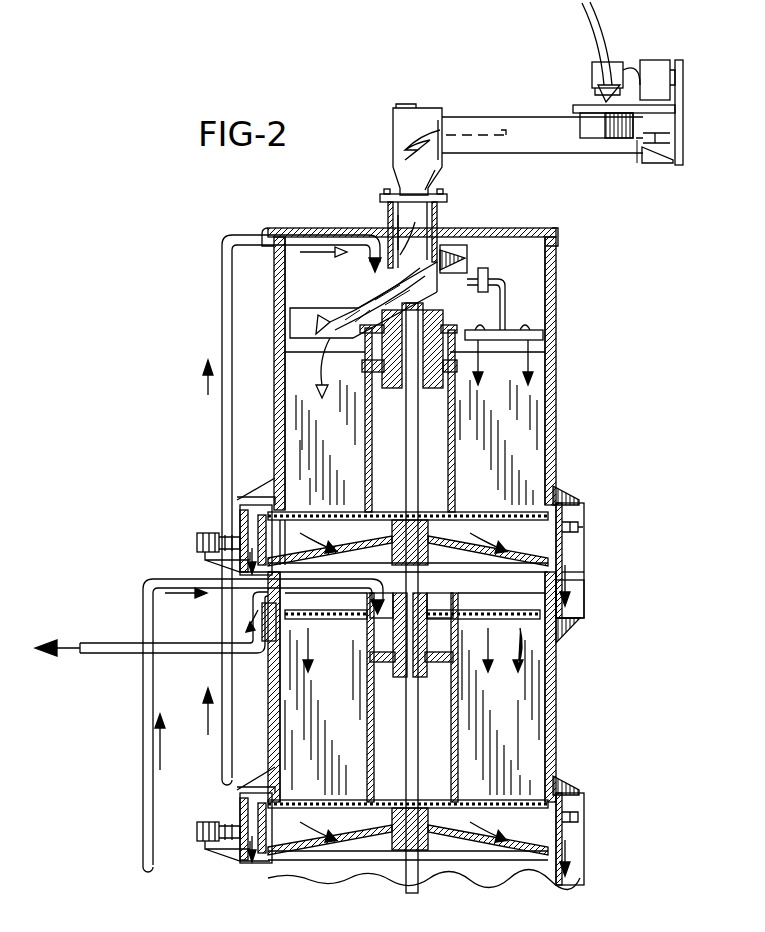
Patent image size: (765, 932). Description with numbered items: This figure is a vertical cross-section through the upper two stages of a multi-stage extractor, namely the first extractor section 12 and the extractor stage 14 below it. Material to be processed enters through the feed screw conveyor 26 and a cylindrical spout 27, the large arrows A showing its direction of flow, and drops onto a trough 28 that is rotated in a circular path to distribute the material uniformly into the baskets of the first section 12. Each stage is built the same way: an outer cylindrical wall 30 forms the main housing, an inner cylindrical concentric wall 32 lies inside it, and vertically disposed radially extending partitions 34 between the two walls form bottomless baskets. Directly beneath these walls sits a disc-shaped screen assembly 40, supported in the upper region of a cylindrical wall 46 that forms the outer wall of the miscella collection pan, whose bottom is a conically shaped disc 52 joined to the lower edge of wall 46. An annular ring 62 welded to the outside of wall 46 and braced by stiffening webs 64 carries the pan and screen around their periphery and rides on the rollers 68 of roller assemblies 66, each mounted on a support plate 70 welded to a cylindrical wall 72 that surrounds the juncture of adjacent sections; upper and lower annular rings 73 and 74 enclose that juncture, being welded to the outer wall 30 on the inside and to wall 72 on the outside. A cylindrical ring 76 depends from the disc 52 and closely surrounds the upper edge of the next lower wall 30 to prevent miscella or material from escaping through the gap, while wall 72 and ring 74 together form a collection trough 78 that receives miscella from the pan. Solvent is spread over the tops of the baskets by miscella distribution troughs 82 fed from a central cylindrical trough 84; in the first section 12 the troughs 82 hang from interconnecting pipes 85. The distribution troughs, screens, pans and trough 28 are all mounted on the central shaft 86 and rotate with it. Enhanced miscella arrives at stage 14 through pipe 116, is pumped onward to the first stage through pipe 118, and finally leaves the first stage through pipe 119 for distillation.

The first extractor section 12 is at (575, 364).
The extractor stage 14 is at (566, 702).
The feed screw conveyor 26 is at (505, 118).
The cylindrical spout 27 is at (390, 215).
The trough 28 is at (347, 305).
The cylindrical wall 30 is at (556, 456).
The inner cylindrical concentric wall 32 is at (452, 425).
The partitions 34 is at (298, 406).
The screen assembly 40 is at (503, 517).
The cylindrical wall 46 is at (570, 560).
The conically-shaped disc 52 is at (543, 556).
The annular ring 62 is at (572, 540).
The stiffening webs 64 is at (576, 527).
The roller assemblies 66 is at (245, 522).
The rollers 68 is at (275, 537).
The support plate 70 is at (202, 552).
The cylindrical wall 72 is at (250, 612).
The upper annular ring 73 is at (570, 500).
The lower annular ring 74 is at (566, 630).
The cylindrical ring 76 is at (576, 590).
The collection trough 78 is at (586, 607).
The miscella distribution troughs 82 is at (515, 330).
The central cylindrical trough 84 is at (467, 258).
The interconnecting pipes 85 is at (510, 300).
The central shaft 86 is at (412, 742).
The pipe 116 is at (143, 728).
The pipe 118 is at (222, 330).
The pipe 119 is at (107, 643).
The large arrows A is at (438, 224).